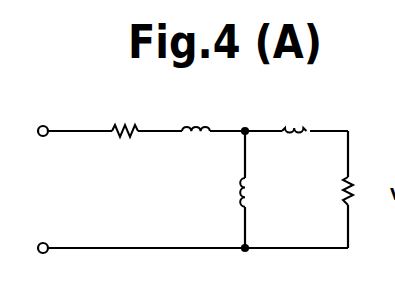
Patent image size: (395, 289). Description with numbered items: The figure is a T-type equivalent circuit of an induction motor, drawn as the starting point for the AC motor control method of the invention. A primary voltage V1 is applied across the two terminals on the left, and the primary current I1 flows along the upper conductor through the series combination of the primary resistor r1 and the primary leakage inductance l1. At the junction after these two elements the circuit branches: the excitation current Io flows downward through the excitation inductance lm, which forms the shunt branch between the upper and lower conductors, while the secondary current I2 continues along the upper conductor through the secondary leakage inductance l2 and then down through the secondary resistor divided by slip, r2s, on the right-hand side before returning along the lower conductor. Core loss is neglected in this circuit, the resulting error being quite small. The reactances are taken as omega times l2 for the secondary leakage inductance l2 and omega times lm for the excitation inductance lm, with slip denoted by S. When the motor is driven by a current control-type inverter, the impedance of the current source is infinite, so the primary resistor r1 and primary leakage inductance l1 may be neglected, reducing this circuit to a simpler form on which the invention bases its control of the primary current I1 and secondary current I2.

The primary voltage V1 is at (43, 152).
The primary current I1 is at (60, 117).
The primary resistor r1 is at (125, 121).
The primary leakage inductance l1 is at (196, 116).
The secondary current I2 is at (235, 120).
The secondary leakage inductance l2 is at (295, 117).
The excitation current Io is at (232, 152).
The excitation inductance lm is at (260, 192).
The secondary resistor divided by slip r2s is at (374, 191).